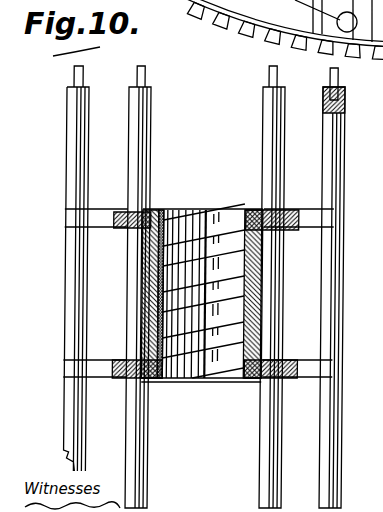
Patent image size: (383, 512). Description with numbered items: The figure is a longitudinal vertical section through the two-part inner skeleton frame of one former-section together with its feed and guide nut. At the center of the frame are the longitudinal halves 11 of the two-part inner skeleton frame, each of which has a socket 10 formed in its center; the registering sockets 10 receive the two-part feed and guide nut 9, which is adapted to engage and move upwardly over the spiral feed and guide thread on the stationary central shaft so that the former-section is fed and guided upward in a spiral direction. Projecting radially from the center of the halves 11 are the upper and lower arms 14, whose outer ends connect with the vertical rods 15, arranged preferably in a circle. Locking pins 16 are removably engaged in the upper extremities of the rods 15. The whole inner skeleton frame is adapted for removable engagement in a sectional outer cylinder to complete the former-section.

The feed and guide nut 9 is at (263, 285).
The socket 10 is at (263, 331).
The longitudinal half 11 is at (142, 237).
The arm 14 is at (97, 218).
The vertical rod 15 is at (74, 121).
The locking pin 16 is at (266, 78).